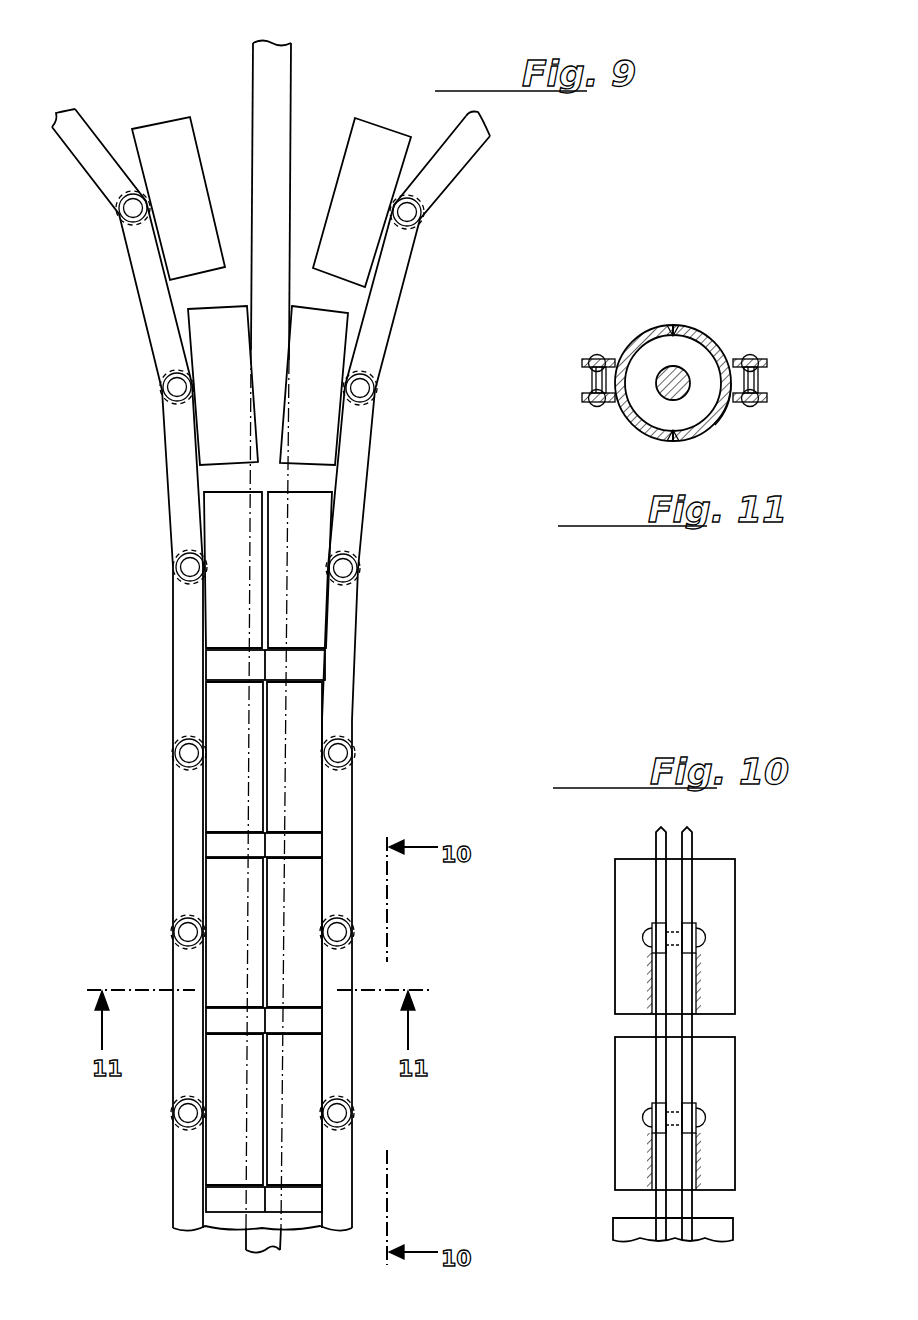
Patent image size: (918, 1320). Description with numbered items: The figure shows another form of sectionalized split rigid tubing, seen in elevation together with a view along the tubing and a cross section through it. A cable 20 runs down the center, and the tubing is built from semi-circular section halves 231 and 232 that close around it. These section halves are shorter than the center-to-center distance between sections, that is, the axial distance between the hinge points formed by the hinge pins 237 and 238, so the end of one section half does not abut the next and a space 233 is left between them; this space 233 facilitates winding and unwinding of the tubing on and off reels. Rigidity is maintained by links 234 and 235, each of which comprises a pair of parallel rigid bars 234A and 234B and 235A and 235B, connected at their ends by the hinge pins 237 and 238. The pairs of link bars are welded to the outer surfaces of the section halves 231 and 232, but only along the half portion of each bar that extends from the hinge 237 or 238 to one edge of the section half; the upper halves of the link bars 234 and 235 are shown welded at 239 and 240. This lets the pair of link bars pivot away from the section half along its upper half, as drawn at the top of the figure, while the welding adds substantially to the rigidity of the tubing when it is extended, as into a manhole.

In FIG. 9, the cable 20 is at (282, 117).
In FIG. 11, the cable 20 is at (670, 393).
In FIG. 9, the semi-circular section half 231 is at (180, 152).
In FIG. 11, the semi-circular section half 231 is at (648, 323).
In FIG. 9, the semi-circular section half 232 is at (370, 140).
In FIG. 11, the semi-circular section half 232 is at (695, 323).
In FIG. 10, the semi-circular section half 232 is at (720, 902).
In FIG. 9, the space 233 is at (345, 300).
In FIG. 10, the space 233 is at (715, 1027).
In FIG. 9, the link 234 is at (164, 510).
In FIG. 11, the parallel rigid bar 234A is at (583, 360).
In FIG. 11, the parallel rigid bar 234B is at (582, 402).
In FIG. 9, the link 235 is at (427, 670).
In FIG. 9, the parallel rigid bar 235A is at (457, 170).
In FIG. 11, the parallel rigid bar 235A is at (767, 362).
In FIG. 10, the parallel rigid bar 235A is at (653, 1058).
In FIG. 11, the parallel rigid bar 235B is at (767, 403).
In FIG. 10, the parallel rigid bar 235B is at (692, 1085).
In FIG. 9, the hinge pin 237 is at (176, 390).
In FIG. 11, the hinge pin 237 is at (590, 378).
In FIG. 9, the hinge pin 238 is at (365, 387).
In FIG. 11, the hinge pin 238 is at (755, 383).
In FIG. 10, the hinge pin 238 is at (680, 938).
In FIG. 9, the weld 239 is at (200, 608).
In FIG. 9, the weld 240 is at (328, 621).
In FIG. 11, the weld 240 is at (730, 407).
In FIG. 10, the weld 240 is at (648, 975).